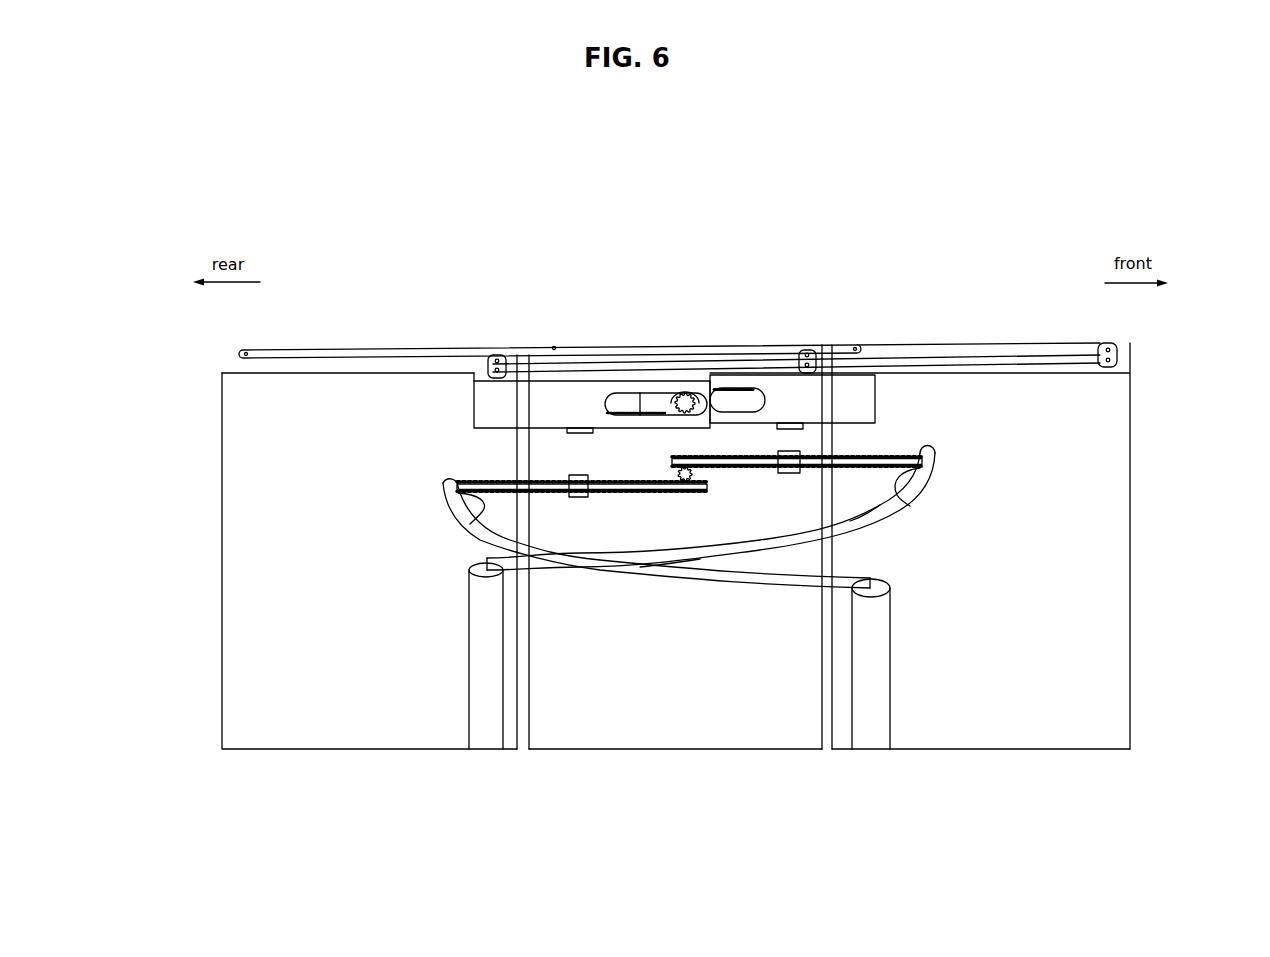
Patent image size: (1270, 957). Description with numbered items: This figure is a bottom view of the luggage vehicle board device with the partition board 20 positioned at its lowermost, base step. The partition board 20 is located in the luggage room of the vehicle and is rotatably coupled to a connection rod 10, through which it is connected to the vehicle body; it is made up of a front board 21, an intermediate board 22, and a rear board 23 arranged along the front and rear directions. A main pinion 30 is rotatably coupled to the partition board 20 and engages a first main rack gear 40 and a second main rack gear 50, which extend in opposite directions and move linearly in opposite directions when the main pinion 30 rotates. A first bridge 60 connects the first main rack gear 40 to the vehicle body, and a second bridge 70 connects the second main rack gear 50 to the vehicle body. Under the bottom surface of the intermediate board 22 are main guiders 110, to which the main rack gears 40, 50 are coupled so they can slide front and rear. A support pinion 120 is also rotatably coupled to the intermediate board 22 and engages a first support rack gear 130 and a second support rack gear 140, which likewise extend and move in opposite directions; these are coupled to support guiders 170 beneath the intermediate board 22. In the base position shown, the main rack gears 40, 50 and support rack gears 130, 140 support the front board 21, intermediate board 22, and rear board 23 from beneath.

The connection rod 10 is at (334, 352).
The partition board 20 is at (212, 672).
The front board 21 is at (968, 720).
The intermediate board 22 is at (593, 727).
The rear board 23 is at (356, 727).
The main pinion 30 is at (698, 474).
The first main rack gear 40 is at (913, 502).
The second main rack gear 50 is at (478, 525).
The first bridge 60 is at (867, 520).
The second bridge 70 is at (673, 572).
The main guider 110 is at (580, 497).
The support pinion 120 is at (683, 393).
The first support rack gear 130 is at (840, 400).
The second support rack gear 140 is at (540, 408).
The support guider 170 is at (567, 433).